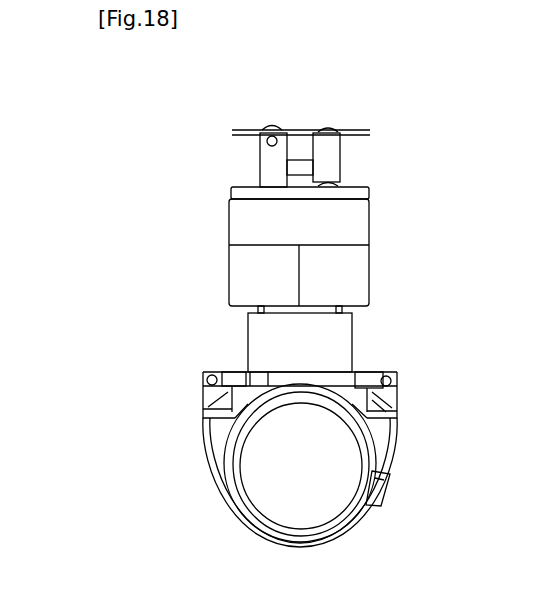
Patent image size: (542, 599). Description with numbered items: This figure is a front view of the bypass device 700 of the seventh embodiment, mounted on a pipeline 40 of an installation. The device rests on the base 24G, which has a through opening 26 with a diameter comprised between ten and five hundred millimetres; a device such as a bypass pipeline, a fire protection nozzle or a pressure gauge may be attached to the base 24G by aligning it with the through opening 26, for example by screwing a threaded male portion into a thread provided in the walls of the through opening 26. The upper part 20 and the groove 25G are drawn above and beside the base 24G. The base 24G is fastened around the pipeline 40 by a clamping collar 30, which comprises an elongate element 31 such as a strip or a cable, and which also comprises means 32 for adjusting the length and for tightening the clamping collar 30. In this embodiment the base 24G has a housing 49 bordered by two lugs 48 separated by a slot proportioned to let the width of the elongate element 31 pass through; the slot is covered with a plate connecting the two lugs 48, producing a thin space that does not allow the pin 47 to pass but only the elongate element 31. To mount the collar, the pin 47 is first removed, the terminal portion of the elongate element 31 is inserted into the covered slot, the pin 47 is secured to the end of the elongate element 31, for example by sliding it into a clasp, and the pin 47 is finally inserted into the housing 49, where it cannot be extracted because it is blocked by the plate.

The bypass device 700 is at (332, 111).
The upper body 20 is at (358, 228).
The through opening 26 is at (338, 332).
The base 24G is at (258, 382).
The groove 25G is at (214, 371).
The pin 47 is at (383, 378).
The lugs 48 is at (398, 392).
The housing 49 is at (395, 379).
The clamping collar 30 is at (241, 519).
The elongate element 31 is at (222, 487).
The means for adjusting the length and for tightening 32 is at (386, 480).
The pipeline 40 is at (317, 520).